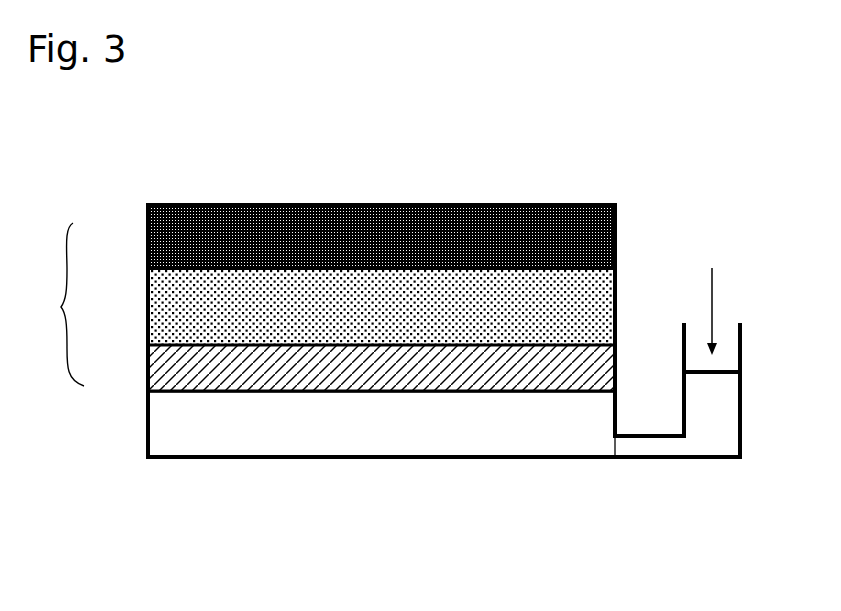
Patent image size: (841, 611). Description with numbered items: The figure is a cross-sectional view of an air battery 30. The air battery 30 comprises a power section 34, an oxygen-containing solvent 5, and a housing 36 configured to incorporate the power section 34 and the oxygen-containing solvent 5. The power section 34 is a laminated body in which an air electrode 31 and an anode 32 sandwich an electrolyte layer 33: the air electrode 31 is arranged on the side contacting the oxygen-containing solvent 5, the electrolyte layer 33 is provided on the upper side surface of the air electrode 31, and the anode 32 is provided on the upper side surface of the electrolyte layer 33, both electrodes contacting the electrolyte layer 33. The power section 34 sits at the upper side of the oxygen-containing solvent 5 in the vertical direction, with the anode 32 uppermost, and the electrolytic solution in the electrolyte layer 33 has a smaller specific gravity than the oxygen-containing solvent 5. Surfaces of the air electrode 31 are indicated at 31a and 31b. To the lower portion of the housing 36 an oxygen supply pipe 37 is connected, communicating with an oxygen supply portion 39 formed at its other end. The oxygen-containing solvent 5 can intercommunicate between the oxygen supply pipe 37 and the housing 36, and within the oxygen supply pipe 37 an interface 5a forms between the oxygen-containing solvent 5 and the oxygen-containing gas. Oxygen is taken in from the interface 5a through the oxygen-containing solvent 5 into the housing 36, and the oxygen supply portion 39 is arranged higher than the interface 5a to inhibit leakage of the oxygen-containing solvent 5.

The air battery 30 is at (404, 118).
The oxygen-containing solvent 5 is at (146, 428).
The interface 5a is at (717, 371).
The air electrode 31 is at (146, 374).
The upper surface region of semiconductor layer 31a is at (617, 328).
The lower surface region of semiconductor layer 31b is at (617, 382).
The anode 32 is at (146, 237).
The electrolyte layer 33 is at (146, 316).
The power section 34 is at (58, 304).
The housing 36 is at (506, 203).
The oxygen supply pipe 37 is at (660, 459).
The oxygen supply portion 39 is at (725, 325).